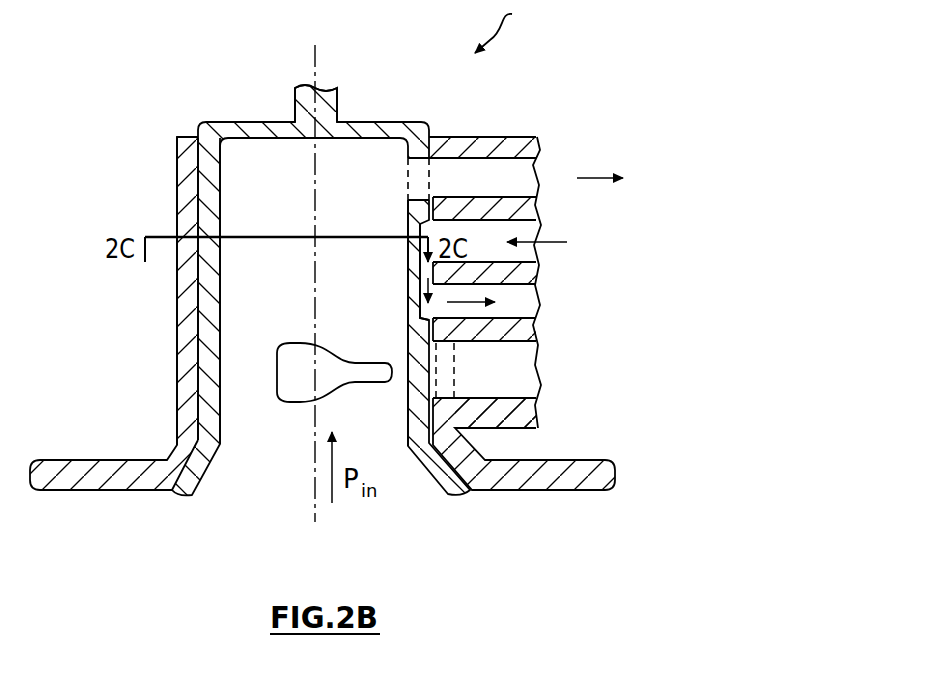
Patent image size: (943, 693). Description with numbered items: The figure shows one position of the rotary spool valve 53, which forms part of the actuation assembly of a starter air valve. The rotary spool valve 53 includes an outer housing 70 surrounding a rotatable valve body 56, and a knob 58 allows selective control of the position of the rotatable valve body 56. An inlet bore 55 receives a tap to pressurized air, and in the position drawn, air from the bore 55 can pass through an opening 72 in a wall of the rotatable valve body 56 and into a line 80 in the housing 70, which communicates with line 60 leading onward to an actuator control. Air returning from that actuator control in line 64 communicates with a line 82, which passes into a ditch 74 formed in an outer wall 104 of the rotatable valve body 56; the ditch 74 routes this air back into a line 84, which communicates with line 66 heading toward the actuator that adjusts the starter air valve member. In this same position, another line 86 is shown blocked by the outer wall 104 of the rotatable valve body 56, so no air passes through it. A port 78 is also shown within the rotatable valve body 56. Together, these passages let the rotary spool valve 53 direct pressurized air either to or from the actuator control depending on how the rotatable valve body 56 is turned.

The rotary spool valve 53 is at (510, 28).
The inlet bore 55 is at (262, 380).
The rotatable valve body 56 is at (208, 365).
The knob 58 is at (326, 108).
The line 60 is at (582, 172).
The line 64 is at (565, 237).
The line 66 is at (601, 302).
The outer housing 70 is at (183, 262).
The opening 72 is at (413, 180).
The ditch 74 is at (421, 276).
The port 78 is at (293, 388).
The line 80 is at (479, 132).
The line 82 is at (523, 224).
The line 84 is at (528, 292).
The line 86 is at (508, 383).
The outer wall 104 is at (198, 330).